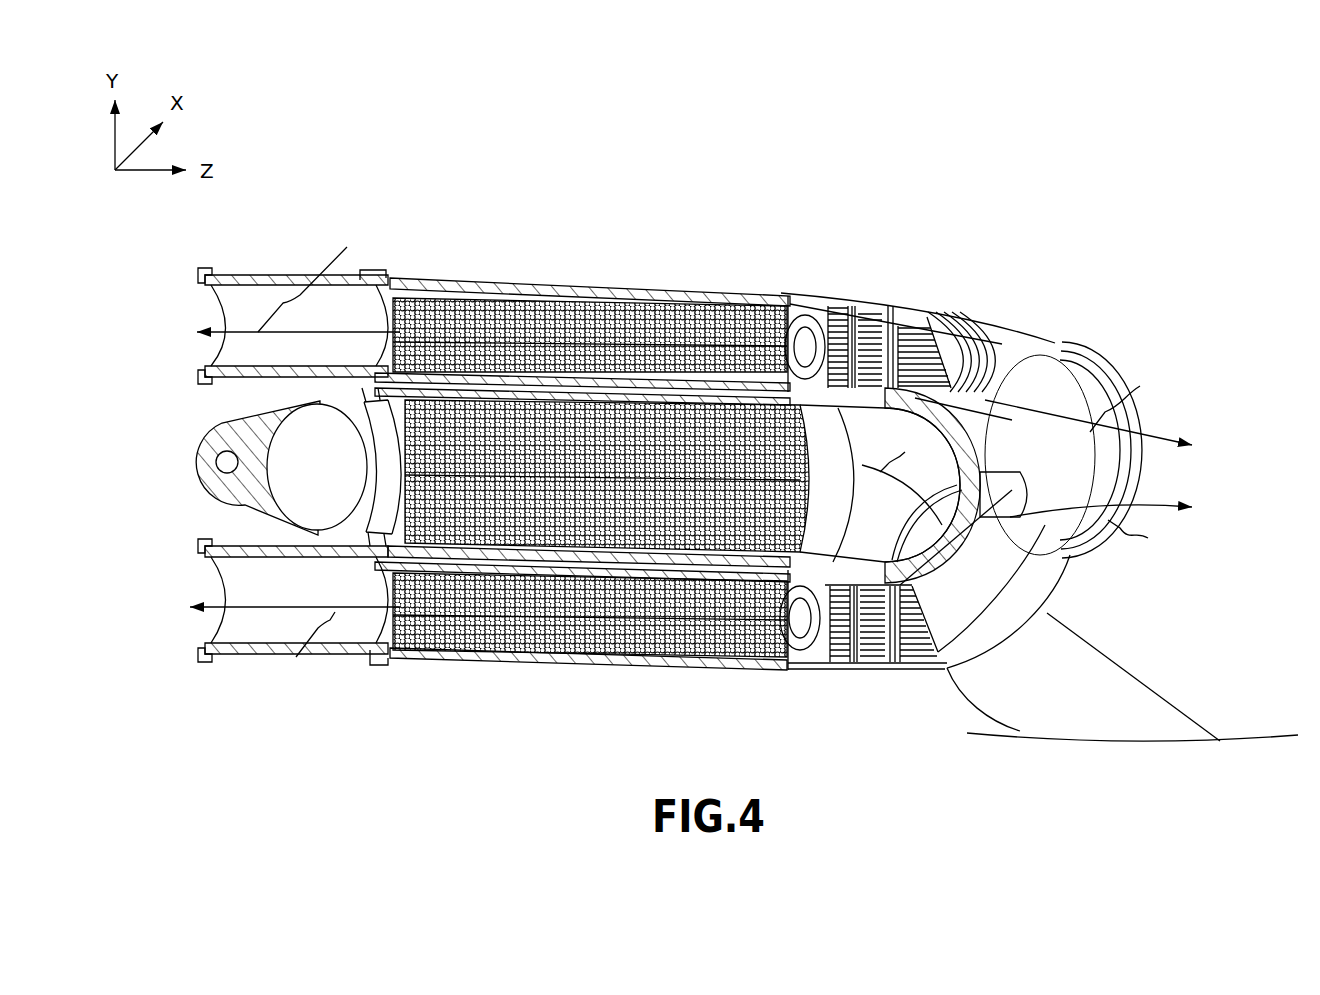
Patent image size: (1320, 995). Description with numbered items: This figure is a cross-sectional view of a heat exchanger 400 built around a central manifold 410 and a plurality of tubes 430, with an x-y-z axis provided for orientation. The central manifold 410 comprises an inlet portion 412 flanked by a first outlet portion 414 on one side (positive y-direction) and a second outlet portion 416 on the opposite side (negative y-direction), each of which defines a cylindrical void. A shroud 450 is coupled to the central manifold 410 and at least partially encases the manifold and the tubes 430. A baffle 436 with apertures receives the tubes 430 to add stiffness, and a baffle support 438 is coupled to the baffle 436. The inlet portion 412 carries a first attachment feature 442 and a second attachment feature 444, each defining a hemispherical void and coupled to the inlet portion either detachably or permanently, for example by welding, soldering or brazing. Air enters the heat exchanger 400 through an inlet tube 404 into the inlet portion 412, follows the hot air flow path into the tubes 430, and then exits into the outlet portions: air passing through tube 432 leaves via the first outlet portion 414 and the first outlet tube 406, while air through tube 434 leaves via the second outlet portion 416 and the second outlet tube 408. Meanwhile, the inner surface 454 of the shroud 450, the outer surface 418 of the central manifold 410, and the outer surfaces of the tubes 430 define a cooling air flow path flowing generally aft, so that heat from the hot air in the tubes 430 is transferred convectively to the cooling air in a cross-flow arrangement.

The heat exchanger 400 is at (1052, 198).
The inlet tube 404 is at (1113, 705).
The first outlet tube 406 is at (247, 303).
The second outlet tube 408 is at (270, 625).
The central manifold 410 is at (800, 320).
The inlet portion 412 is at (805, 535).
The first outlet portion 414 is at (548, 306).
The second outlet portion 416 is at (505, 663).
The outer surface of central manifold 418 is at (625, 296).
The plurality of tubes 430 is at (977, 390).
The tube 432 is at (990, 343).
The tube 434 is at (890, 658).
The baffle 436 is at (935, 335).
The baffle support 438 is at (948, 405).
The first attachment feature 442 is at (222, 483).
The second attachment feature 444 is at (1060, 530).
The shroud 450 is at (893, 310).
The inner surface of shroud 454 is at (1108, 465).